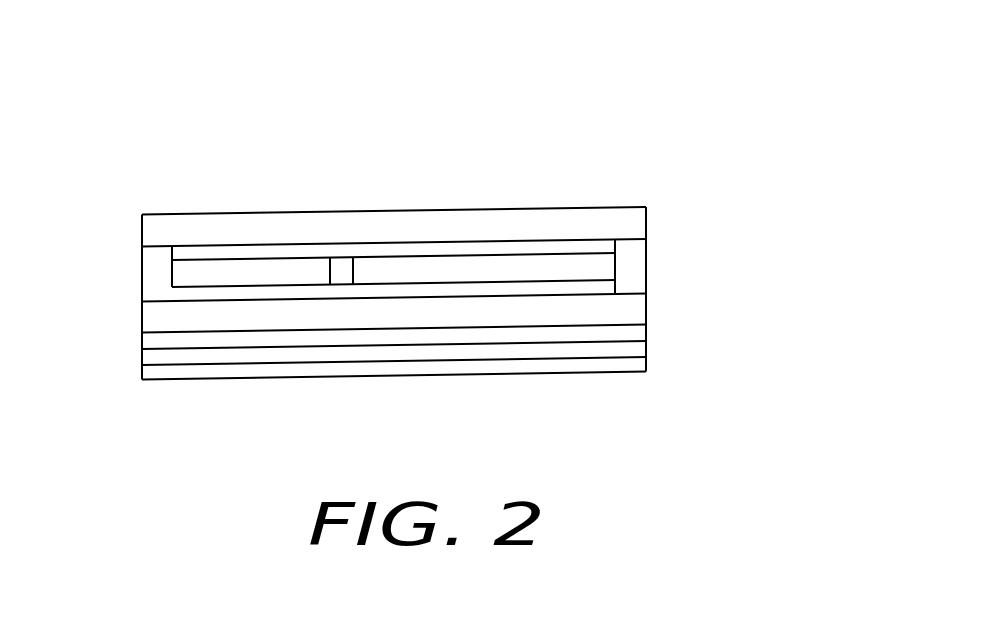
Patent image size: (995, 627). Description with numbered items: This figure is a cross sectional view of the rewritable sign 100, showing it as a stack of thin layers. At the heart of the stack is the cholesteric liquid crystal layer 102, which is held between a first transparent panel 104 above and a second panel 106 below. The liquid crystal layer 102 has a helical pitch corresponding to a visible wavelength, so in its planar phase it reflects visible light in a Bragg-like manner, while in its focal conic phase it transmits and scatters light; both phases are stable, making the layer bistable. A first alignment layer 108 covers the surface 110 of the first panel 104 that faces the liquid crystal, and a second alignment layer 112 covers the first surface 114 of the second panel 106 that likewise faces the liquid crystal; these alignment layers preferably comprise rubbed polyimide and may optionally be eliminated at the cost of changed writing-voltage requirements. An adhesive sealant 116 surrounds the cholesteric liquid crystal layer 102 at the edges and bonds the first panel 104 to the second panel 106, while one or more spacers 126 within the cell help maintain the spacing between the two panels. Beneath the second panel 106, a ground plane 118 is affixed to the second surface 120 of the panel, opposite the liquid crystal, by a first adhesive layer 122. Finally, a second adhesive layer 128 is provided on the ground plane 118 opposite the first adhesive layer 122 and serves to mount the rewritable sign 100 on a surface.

The rewritable sign 100 is at (607, 92).
The cholesteric liquid crystal layer 102 is at (402, 265).
The first transparent panel 104 is at (646, 207).
The second panel 106 is at (646, 303).
The first alignment layer 108 is at (497, 245).
The surface of first panel 110 is at (193, 250).
The second alignment layer 112 is at (368, 293).
The first surface of second panel 114 is at (246, 292).
The adhesive sealant 116 is at (646, 254).
The ground plane 118 is at (572, 350).
The second surface of second panel 120 is at (252, 360).
The first adhesive layer 122 is at (482, 338).
The spacers 126 is at (340, 265).
The second adhesive layer 128 is at (643, 371).